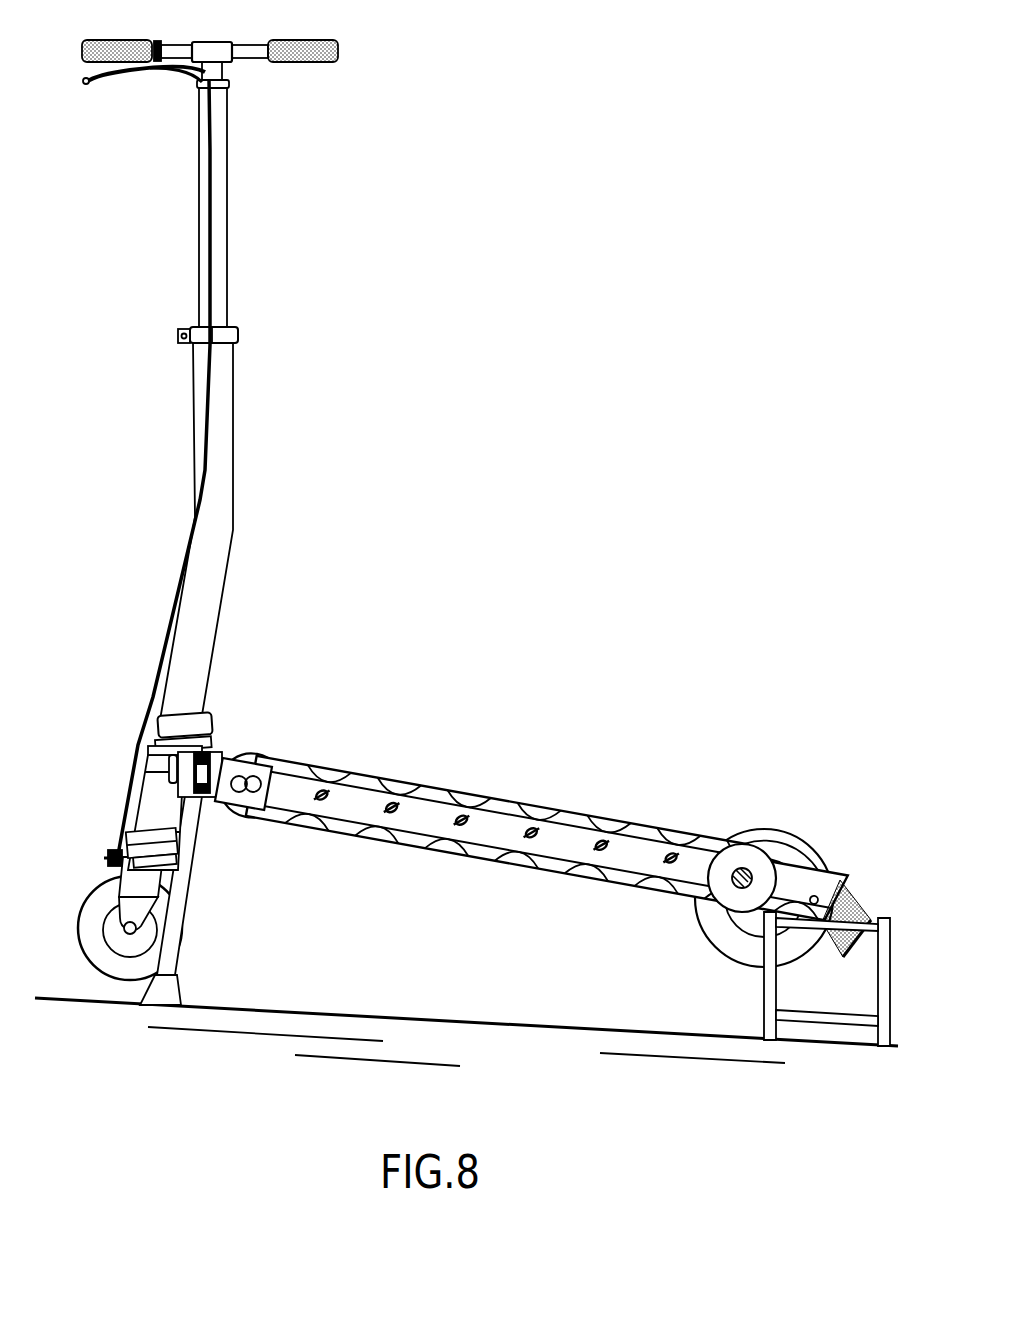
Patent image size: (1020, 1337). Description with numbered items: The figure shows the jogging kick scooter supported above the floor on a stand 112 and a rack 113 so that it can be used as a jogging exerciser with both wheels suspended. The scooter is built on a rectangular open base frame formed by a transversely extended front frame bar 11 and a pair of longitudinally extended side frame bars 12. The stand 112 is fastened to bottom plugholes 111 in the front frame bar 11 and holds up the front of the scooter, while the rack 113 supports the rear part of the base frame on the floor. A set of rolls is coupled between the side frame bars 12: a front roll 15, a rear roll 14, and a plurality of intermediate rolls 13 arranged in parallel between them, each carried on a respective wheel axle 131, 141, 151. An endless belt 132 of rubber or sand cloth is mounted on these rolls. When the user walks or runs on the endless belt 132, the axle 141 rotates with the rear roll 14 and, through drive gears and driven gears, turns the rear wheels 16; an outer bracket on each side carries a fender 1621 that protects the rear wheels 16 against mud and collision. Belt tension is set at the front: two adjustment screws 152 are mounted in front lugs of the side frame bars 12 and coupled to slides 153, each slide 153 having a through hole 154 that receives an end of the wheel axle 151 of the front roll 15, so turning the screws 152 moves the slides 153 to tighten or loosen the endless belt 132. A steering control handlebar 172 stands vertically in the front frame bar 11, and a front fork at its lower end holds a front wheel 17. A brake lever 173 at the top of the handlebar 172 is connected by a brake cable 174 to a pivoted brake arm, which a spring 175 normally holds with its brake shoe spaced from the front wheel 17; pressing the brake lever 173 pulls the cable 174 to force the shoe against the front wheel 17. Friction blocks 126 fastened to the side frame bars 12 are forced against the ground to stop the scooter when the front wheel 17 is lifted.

The transversely extended front frame bar 11 is at (192, 807).
The bottom plugholes 111 is at (197, 848).
The stand 112 is at (172, 925).
The rack 113 is at (770, 992).
The side frame bars 12 is at (568, 837).
The friction blocks 126 is at (858, 900).
The intermediate rolls 13 is at (488, 790).
The wheel axle of intermediate roll 131 is at (466, 832).
The endless belt 132 is at (505, 793).
The rear roll 14 is at (745, 855).
The wheel axle of rear roll 141 is at (752, 870).
The front roll 15 is at (270, 758).
The wheel axle of front roll 151 is at (260, 780).
The adjustment screws 152 is at (135, 757).
The slides 153 is at (247, 760).
The through hole 154 is at (246, 812).
The rear wheels 16 is at (740, 933).
The fender 1621 is at (810, 840).
The front wheel 17 is at (118, 973).
The steering control handlebar 172 is at (230, 133).
The brake lever 173 is at (114, 82).
The brake cable 174 is at (122, 816).
The spring 175 is at (108, 861).